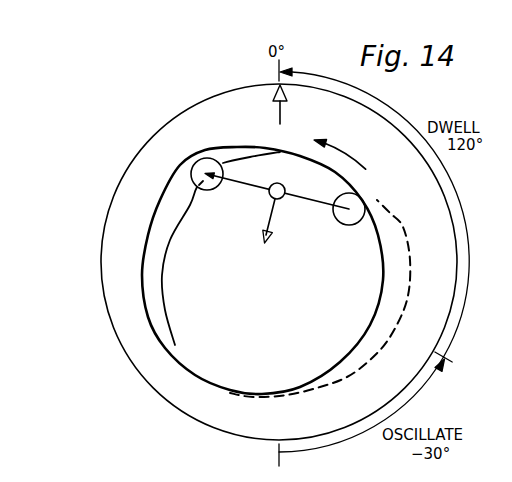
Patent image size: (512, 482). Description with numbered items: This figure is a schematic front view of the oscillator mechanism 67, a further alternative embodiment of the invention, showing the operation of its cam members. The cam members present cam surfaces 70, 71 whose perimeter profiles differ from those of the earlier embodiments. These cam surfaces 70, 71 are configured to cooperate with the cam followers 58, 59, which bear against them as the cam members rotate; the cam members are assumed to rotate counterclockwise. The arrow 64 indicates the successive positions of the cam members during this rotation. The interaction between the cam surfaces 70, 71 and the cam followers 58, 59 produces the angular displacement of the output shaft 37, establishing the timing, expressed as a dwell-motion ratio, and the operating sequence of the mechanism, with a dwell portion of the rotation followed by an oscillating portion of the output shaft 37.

The oscillator mechanism 67 is at (166, 118).
The arrow 64 is at (280, 113).
The output shaft 37 is at (285, 191).
The cam follower 58 is at (207, 190).
The cam follower 59 is at (346, 225).
The cam surface 70 is at (143, 275).
The cam surface 71 is at (371, 351).